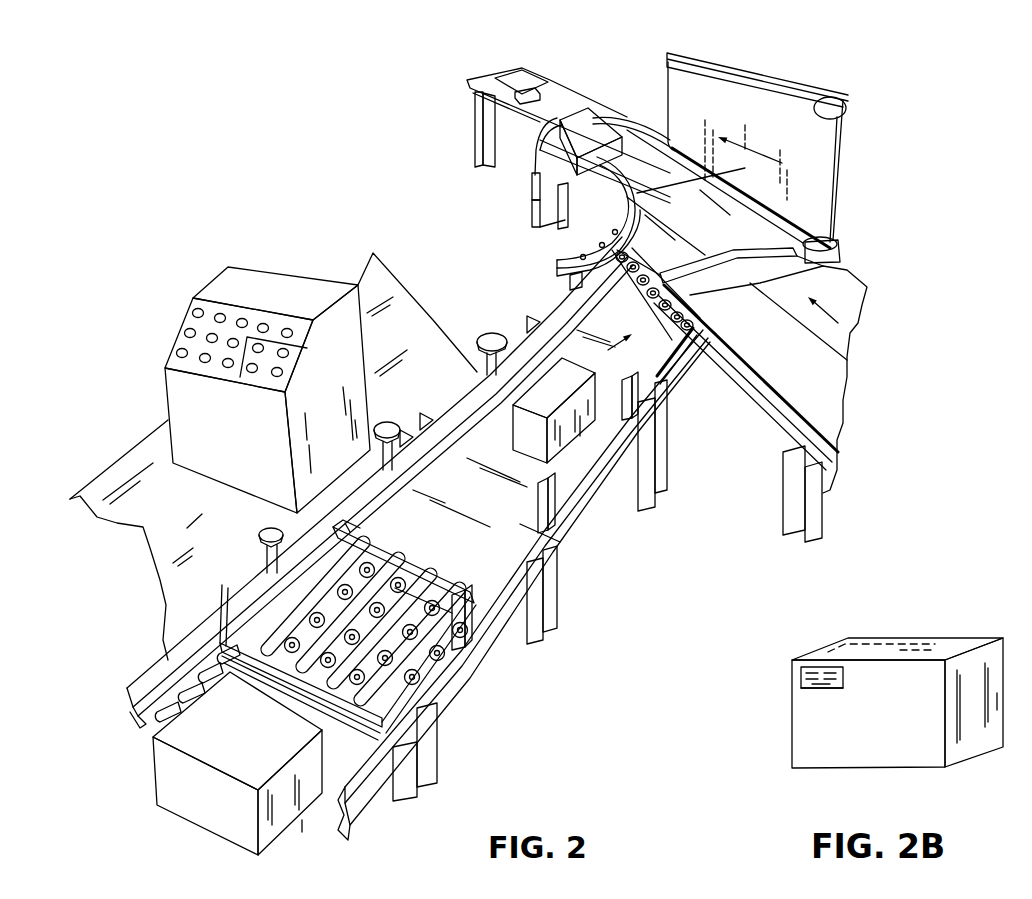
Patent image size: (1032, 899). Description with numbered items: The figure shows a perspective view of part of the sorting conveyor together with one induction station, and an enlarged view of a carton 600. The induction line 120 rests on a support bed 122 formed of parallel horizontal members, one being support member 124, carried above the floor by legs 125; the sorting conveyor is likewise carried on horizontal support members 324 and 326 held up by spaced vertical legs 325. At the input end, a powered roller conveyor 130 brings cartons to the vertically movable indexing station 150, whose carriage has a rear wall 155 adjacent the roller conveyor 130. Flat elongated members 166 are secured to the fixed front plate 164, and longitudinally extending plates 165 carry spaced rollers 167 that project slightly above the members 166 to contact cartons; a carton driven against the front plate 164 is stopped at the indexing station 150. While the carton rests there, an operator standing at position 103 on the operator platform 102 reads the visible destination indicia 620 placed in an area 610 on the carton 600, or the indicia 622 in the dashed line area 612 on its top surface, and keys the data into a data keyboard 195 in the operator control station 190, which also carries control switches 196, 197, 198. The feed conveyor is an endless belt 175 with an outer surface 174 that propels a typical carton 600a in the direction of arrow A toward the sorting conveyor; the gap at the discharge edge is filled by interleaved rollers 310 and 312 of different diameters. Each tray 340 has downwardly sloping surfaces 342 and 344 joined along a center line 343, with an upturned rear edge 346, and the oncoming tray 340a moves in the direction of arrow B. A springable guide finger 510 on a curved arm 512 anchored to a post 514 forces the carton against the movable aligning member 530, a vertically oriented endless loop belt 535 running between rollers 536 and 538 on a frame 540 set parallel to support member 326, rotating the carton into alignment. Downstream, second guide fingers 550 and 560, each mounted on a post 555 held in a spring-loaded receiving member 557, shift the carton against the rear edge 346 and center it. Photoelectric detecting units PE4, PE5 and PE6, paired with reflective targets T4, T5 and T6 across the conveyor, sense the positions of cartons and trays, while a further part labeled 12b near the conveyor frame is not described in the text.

In FIG. 2A, the operator platform 102 is at (100, 473).
In FIG. 2A, the operator position 103 is at (187, 528).
In FIG. 2A, the induction line 120 is at (194, 815).
In FIG. 2A, the support bed 122 is at (567, 523).
In FIG. 2A, the horizontal support member 124 is at (547, 308).
In FIG. 2A, the legs 125 is at (522, 337).
In FIG. 2A, the powered roller conveyor 130 is at (160, 717).
In FIG. 2A, the indexing station 150 is at (426, 682).
In FIG. 2A, the rear wall 155 is at (383, 720).
In FIG. 2A, the front plate 164 is at (418, 573).
In FIG. 2A, the longitudinally extending plates 165 is at (353, 540).
In FIG. 2A, the members 166 is at (222, 643).
In FIG. 2A, the rollers 167 is at (277, 635).
In FIG. 2A, the outer surface 174 is at (477, 495).
In FIG. 2A, the endless belt 175 is at (516, 522).
In FIG. 2A, the operator control station 190 is at (197, 287).
In FIG. 2A, the data keyboard 195 is at (291, 365).
In FIG. 2A, the control switch 196 is at (246, 321).
In FIG. 2A, the control switch 197 is at (231, 346).
In FIG. 2A, the control switch 198 is at (229, 367).
In FIG. 2A, the reflective target T4 is at (259, 531).
In FIG. 2A, the reflective target T5 is at (386, 423).
In FIG. 2A, the reflective target T6 is at (480, 333).
In FIG. 2A, the photoelectric detecting unit PE4 is at (463, 637).
In FIG. 2A, the photoelectric detecting unit PE5 is at (553, 503).
In FIG. 2A, the photoelectric detecting unit PE6 is at (623, 423).
In FIG. 2A, the carton 600 is at (595, 125).
In FIG. 2B, the carton 600 is at (965, 630).
In FIG. 2A, the carton 600a is at (520, 433).
In FIG. 2A, the conveyor end 12b is at (679, 368).
In FIG. 2A, the rollers 310 is at (700, 312).
In FIG. 2A, the rollers 312 is at (658, 313).
In FIG. 2A, the horizontal support member 324 is at (768, 432).
In FIG. 2A, the vertical legs 325 is at (480, 110).
In FIG. 2A, the horizontal support member 326 is at (823, 267).
In FIG. 2A, the tray 340 is at (770, 232).
In FIG. 2A, the tray 340a is at (857, 333).
In FIG. 2A, the downwardly sloping surface 342 is at (675, 240).
In FIG. 2A, the center line 343 is at (702, 248).
In FIG. 2A, the downwardly sloping surface 344 is at (730, 223).
In FIG. 2A, the rear edge 346 is at (840, 250).
In FIG. 2A, the guide finger 510 is at (533, 225).
In FIG. 2A, the curved arm 512 is at (560, 225).
In FIG. 2A, the post 514 is at (577, 280).
In FIG. 2A, the movable aligning member 530 is at (826, 70).
In FIG. 2A, the endless loop belt 535 is at (845, 143).
In FIG. 2A, the roller 536 is at (850, 102).
In FIG. 2A, the roller 538 is at (670, 65).
In FIG. 2A, the frame 540 is at (772, 72).
In FIG. 2A, the second guide finger 550 is at (540, 132).
In FIG. 2A, the post 555 is at (535, 172).
In FIG. 2A, the receiving member 557 is at (532, 197).
In FIG. 2A, the second guide finger 560 is at (625, 122).
In FIG. 2B, the area 610 is at (820, 690).
In FIG. 2B, the dashed line area 612 is at (917, 645).
In FIG. 2B, the visible destination indicia 620 is at (843, 678).
In FIG. 2B, the indicia 622 is at (870, 640).